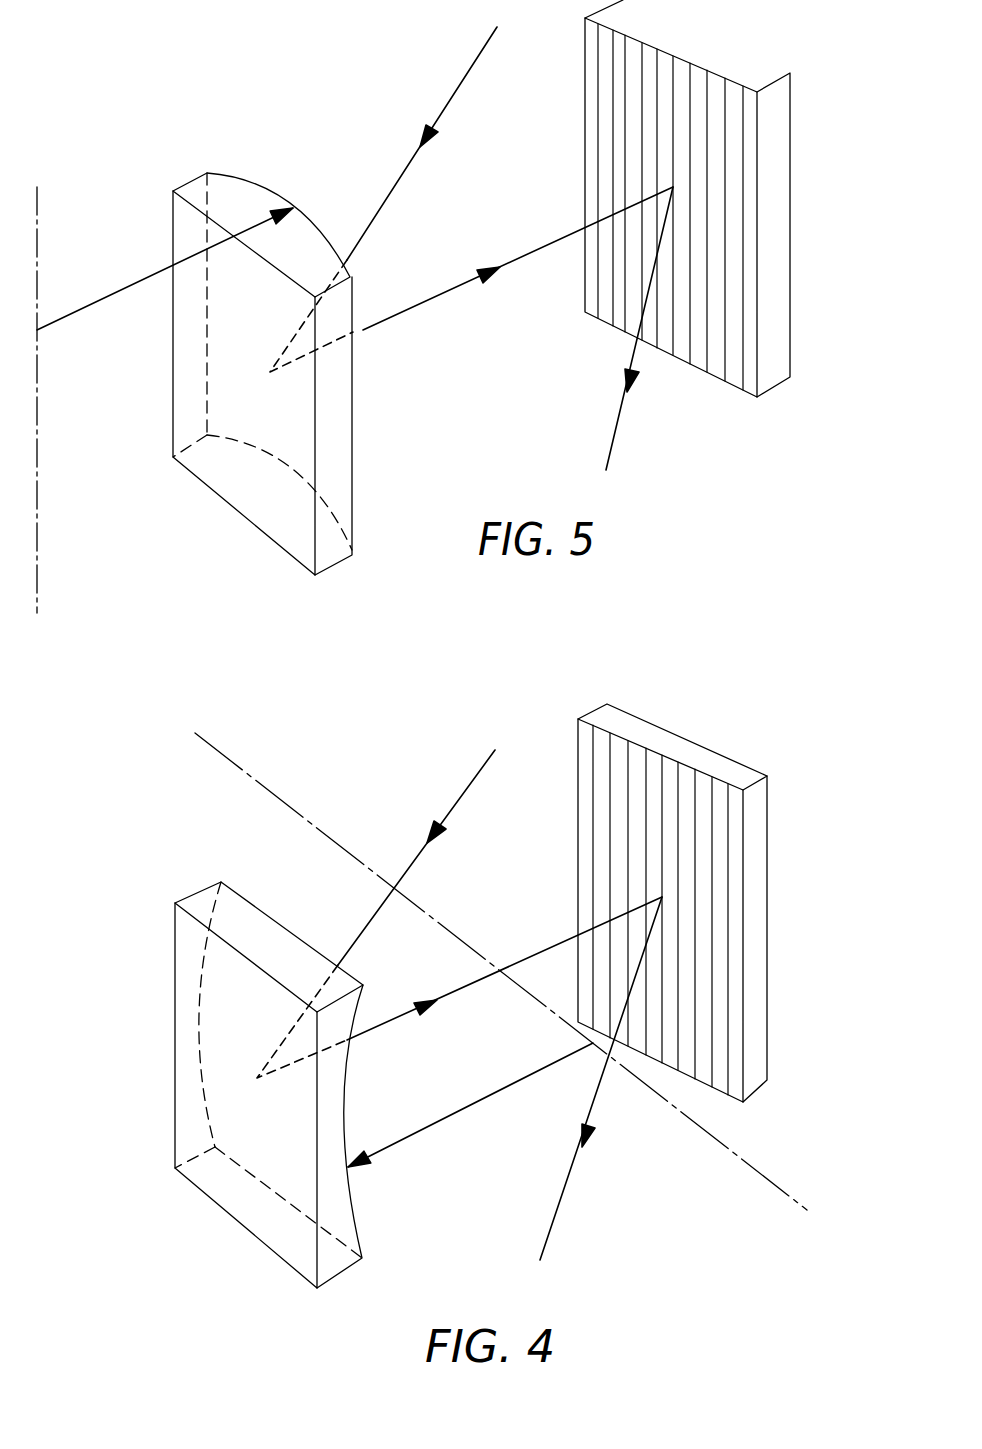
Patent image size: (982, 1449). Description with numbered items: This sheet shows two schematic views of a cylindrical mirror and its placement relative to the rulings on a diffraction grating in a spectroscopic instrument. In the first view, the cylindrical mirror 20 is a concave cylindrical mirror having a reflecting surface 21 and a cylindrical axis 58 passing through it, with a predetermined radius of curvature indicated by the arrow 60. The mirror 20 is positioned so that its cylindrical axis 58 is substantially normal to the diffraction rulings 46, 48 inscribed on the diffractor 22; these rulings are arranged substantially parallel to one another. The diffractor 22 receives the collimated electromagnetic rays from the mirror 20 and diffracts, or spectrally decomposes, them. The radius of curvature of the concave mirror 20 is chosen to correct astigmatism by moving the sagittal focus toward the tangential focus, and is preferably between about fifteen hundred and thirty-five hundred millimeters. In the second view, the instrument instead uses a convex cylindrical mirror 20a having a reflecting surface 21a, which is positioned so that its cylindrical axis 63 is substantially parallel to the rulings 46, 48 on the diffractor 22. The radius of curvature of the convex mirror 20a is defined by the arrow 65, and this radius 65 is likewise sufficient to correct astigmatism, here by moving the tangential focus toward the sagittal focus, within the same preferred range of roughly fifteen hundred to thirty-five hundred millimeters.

In FIG. 4, the cylindrical mirror 20 is at (175, 1082).
In FIG. 5, the convex cylindrical mirror 20a is at (173, 393).
In FIG. 4, the reflecting surface 21 is at (360, 1207).
In FIG. 5, the reflecting surface 21a is at (352, 470).
In FIG. 5, the diffractor 22 is at (790, 207).
In FIG. 4, the diffractor 22 is at (767, 925).
In FIG. 5, the diffraction ruling 46 is at (723, 308).
In FIG. 4, the diffraction ruling 46 is at (713, 990).
In FIG. 5, the diffraction ruling 48 is at (690, 325).
In FIG. 4, the diffraction ruling 48 is at (680, 1008).
In FIG. 4, the cylindrical axis 58 is at (697, 1125).
In FIG. 4, the arrow 60 is at (440, 1125).
In FIG. 5, the cylindrical axis 63 is at (37, 540).
In FIG. 5, the arrow 65 is at (95, 301).